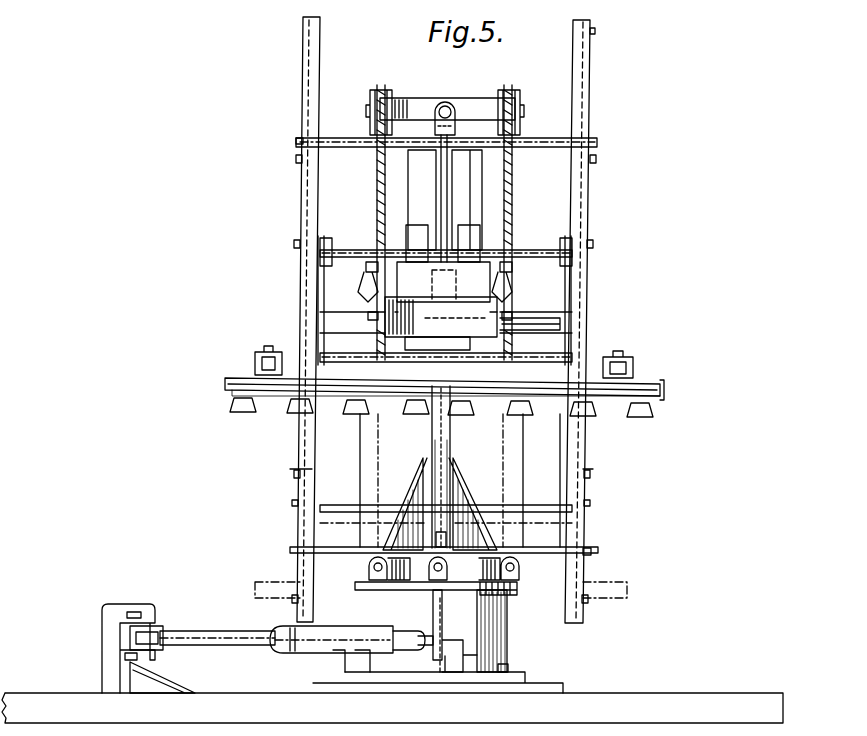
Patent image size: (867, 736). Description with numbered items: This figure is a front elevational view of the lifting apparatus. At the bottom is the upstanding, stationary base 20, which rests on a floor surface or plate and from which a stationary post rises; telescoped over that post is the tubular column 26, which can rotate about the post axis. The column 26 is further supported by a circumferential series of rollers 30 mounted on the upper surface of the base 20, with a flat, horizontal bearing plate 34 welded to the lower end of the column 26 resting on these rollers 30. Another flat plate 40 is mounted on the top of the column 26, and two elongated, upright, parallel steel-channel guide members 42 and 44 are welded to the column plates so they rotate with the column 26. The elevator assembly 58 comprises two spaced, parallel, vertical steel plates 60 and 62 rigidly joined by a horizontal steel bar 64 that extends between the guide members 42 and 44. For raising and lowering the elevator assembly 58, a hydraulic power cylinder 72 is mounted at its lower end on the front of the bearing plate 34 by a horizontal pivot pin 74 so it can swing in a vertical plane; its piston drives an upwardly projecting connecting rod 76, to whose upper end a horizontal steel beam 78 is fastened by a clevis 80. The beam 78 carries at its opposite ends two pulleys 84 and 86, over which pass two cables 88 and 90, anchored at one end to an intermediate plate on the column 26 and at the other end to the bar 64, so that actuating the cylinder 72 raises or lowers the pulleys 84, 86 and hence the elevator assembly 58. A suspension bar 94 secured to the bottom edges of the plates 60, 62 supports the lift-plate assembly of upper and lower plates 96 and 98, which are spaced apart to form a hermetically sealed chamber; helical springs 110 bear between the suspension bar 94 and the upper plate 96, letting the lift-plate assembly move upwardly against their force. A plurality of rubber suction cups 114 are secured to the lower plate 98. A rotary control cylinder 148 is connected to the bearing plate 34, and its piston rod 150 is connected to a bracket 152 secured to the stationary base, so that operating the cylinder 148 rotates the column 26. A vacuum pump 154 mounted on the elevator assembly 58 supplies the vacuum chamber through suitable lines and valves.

The stationary base 20 is at (508, 641).
The tubular column 26 is at (483, 218).
The rollers 30 is at (372, 560).
The bearing plate 34 is at (592, 552).
The top plate 40 is at (598, 143).
The left guide member 42 is at (300, 108).
The right guide member 44 is at (591, 100).
The elevator assembly 58 is at (667, 390).
The elevator plate 60 is at (567, 298).
The elevator plate 62 is at (318, 300).
The horizontal steel bar 64 is at (528, 318).
The hydraulic power cylinder 72 is at (431, 436).
The pivot pin 74 is at (422, 540).
The connecting rod 76 is at (441, 178).
The horizontal steel beam 78 is at (404, 110).
The clevis 80 is at (453, 114).
The pulley 84 is at (372, 96).
The pulley 86 is at (521, 98).
The cable 88 is at (377, 186).
The cable 90 is at (513, 192).
The suspension bar 94 is at (256, 357).
The upper plate 96 is at (225, 383).
The lower plate 98 is at (225, 391).
The helical spring 110 is at (634, 364).
The suction cup 114 is at (250, 413).
The rotary control cylinder 148 is at (290, 657).
The piston rod 150 is at (223, 632).
The bracket 152 is at (122, 614).
The vacuum pump 154 is at (441, 306).